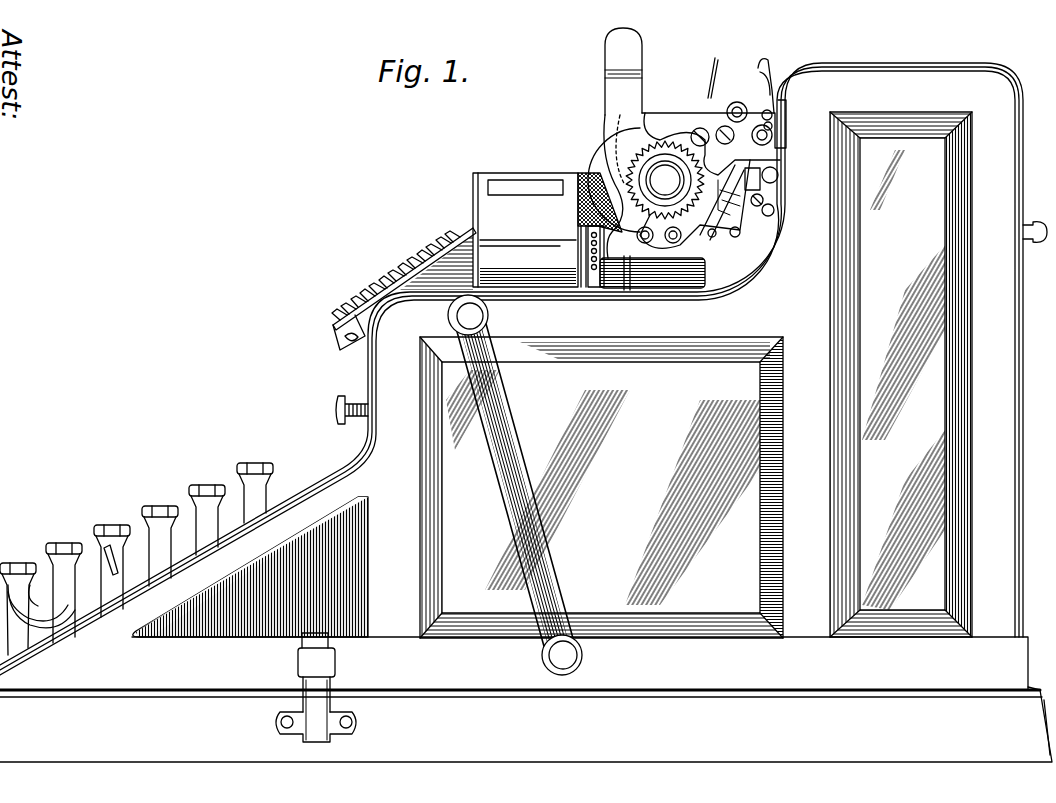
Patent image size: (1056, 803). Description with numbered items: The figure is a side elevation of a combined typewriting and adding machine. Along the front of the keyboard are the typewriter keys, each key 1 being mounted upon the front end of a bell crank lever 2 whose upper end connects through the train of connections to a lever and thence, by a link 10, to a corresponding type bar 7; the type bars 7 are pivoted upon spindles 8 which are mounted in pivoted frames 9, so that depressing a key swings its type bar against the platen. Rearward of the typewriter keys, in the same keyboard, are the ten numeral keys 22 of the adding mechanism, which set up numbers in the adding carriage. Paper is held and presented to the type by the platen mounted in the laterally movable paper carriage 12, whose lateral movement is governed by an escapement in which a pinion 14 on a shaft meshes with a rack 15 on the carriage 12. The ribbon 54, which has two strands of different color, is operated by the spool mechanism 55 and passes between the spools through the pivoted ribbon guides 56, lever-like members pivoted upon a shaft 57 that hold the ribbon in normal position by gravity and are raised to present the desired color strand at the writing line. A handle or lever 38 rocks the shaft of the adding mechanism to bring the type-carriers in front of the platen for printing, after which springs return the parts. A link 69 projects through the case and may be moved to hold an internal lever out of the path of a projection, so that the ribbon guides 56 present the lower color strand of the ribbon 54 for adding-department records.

The typewriter key 1 is at (145, 505).
The numeral key 22 is at (252, 464).
The type bar 7 is at (425, 258).
The spool mechanism 55 is at (496, 174).
The ribbon 54 is at (610, 172).
The spindle 8 is at (590, 260).
The pivoted frame 9 is at (583, 280).
The ribbon guide 56 is at (603, 282).
The link 10 is at (683, 268).
The paper carriage 12 is at (760, 170).
The shaft 57 is at (776, 176).
The rack 15 is at (735, 190).
The pinion 14 is at (735, 210).
The handle or lever 38 is at (523, 540).
The link 69 is at (1028, 240).
The bell crank lever 2 is at (316, 687).